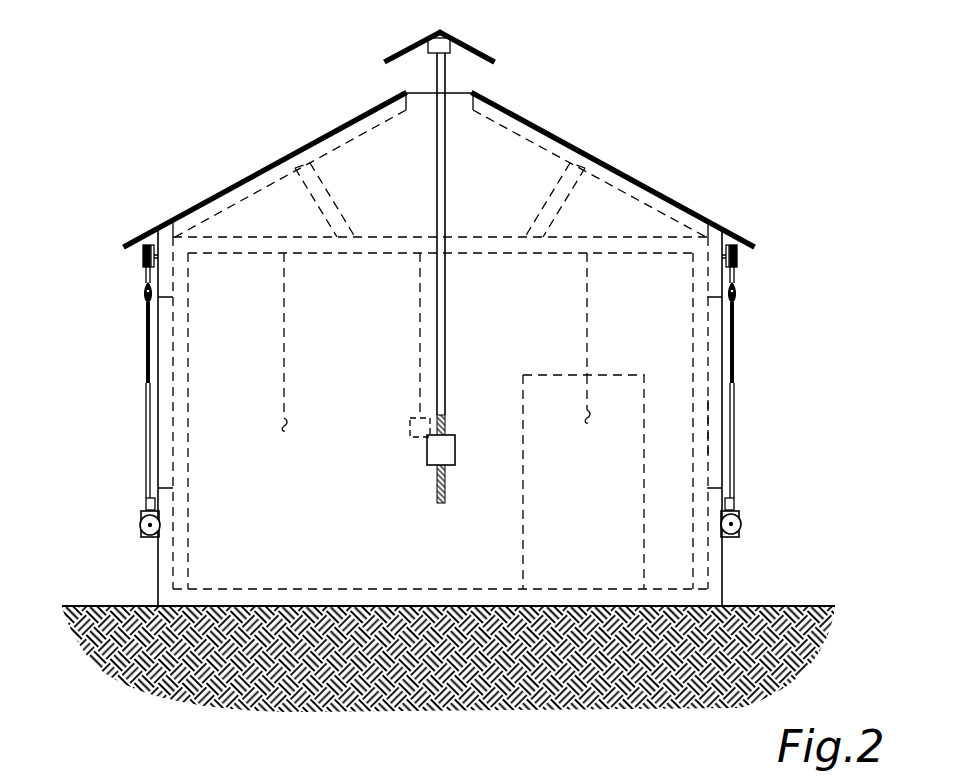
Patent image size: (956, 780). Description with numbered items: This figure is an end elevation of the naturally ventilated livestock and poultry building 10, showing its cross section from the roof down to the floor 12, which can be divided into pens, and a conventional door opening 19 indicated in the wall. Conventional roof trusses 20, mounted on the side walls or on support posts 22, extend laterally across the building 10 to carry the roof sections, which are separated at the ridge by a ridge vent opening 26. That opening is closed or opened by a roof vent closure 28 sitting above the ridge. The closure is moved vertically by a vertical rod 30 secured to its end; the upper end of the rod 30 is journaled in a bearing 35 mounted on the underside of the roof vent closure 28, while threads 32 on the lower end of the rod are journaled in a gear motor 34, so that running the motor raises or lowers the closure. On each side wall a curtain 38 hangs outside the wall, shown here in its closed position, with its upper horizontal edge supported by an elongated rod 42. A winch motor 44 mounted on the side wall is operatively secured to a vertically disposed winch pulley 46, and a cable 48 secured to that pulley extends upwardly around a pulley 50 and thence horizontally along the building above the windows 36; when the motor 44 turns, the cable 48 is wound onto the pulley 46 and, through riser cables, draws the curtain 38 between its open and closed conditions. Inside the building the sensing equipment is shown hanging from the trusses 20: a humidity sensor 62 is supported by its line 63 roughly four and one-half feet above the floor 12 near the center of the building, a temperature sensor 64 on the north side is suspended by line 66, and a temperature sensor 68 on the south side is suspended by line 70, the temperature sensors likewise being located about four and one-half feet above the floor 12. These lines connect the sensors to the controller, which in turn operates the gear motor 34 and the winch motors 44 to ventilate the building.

The building 10 is at (143, 177).
The floor 12 is at (395, 587).
The door openings 19 is at (523, 522).
The roof trusses 20 is at (524, 138).
The support posts 22 is at (708, 428).
The ridge vent opening 26 is at (427, 90).
The roof vent closure 28 is at (402, 47).
The vertical rods 30 is at (441, 305).
The threads 32 is at (437, 484).
The gear motor 34 is at (455, 450).
The bearing 35 is at (438, 32).
The windows 36 is at (165, 300).
The curtain 38 is at (148, 440).
The elongated rod 42 is at (738, 288).
The winch motors 44 is at (145, 511).
The winch pulley 46 is at (141, 519).
The cable 48 is at (147, 467).
The pulley 50 is at (738, 257).
The humidity sensor 62 is at (410, 423).
The line 63 is at (420, 313).
The temperature sensors 64 is at (288, 462).
The line 66 is at (284, 296).
The temperature sensors 68 is at (587, 428).
The line 70 is at (587, 297).